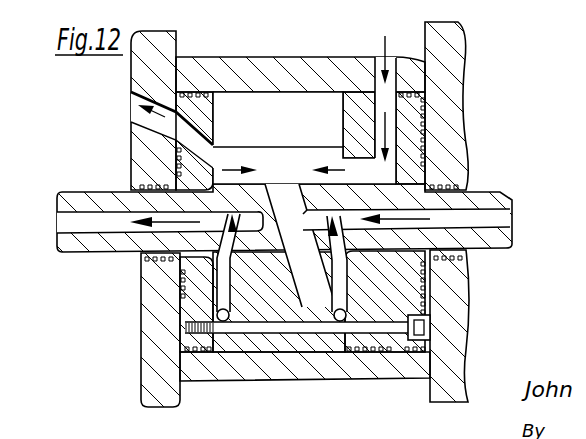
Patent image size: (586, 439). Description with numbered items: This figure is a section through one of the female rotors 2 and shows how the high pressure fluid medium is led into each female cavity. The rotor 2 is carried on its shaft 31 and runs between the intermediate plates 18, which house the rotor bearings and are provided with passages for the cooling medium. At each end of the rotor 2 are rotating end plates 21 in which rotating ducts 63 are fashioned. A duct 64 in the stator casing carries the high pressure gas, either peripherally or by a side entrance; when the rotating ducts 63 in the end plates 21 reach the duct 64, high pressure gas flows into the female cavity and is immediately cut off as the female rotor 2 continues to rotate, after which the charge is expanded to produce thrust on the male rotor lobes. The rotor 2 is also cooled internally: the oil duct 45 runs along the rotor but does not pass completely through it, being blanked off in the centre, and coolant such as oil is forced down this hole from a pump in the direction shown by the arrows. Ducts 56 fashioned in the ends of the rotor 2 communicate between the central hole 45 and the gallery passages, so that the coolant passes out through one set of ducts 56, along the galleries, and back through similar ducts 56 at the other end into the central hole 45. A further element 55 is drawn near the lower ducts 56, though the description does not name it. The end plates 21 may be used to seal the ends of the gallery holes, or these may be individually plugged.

The female rotor 2 is at (284, 186).
The intermediate plate 18 is at (160, 138).
The rotor end plate 21 is at (197, 297).
The rotor shaft 31 is at (100, 202).
The oil duct 45 is at (60, 232).
The pin 55 is at (352, 323).
The duct 56 is at (337, 283).
The rotating duct 63 is at (197, 143).
The stator casing duct 64 is at (158, 115).